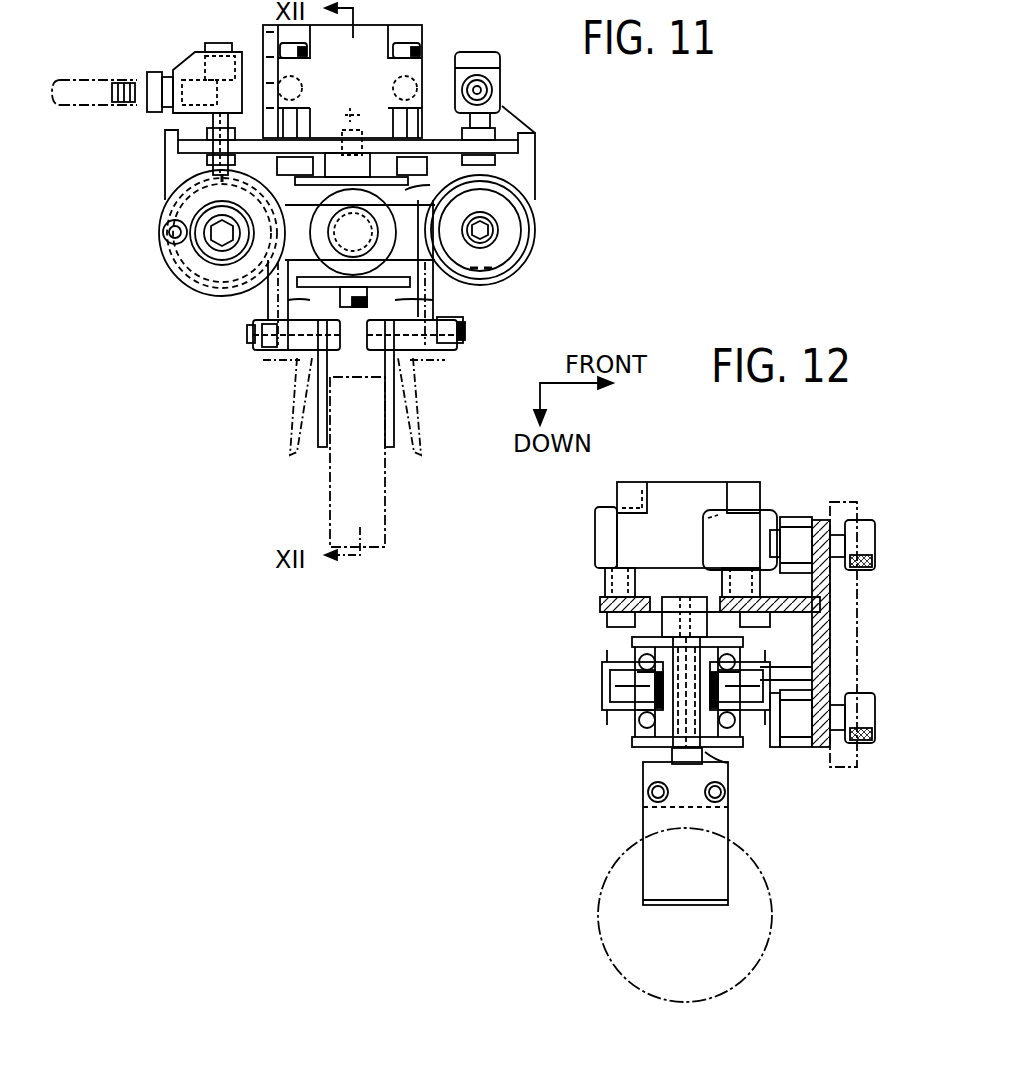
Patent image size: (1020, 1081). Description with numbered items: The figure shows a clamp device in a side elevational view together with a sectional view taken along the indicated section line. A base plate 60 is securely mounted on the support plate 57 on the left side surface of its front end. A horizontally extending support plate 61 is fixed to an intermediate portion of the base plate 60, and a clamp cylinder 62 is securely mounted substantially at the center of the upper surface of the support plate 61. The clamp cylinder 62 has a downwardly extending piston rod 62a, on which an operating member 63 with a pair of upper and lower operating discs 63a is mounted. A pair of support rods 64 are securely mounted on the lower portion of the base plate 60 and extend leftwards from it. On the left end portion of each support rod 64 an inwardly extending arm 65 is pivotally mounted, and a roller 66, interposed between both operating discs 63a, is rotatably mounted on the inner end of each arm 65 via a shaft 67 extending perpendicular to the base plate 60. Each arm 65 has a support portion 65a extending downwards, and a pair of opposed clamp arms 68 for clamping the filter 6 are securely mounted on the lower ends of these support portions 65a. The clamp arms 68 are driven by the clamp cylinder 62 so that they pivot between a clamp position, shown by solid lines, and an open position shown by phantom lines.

In FIG. 11, the filter 6 is at (386, 510).
In FIG. 12, the filter 6 is at (770, 955).
In FIG. 12, the support plate 57 is at (857, 638).
In FIG. 11, the base plate 60 is at (520, 110).
In FIG. 12, the base plate 60 is at (818, 750).
In FIG. 11, the support plate 61 is at (535, 180).
In FIG. 12, the support plate 61 is at (797, 592).
In FIG. 11, the clamp cylinder 62 is at (420, 48).
In FIG. 12, the clamp cylinder 62 is at (760, 487).
In FIG. 11, the piston rod 62a is at (380, 135).
In FIG. 12, the piston rod 62a is at (718, 580).
In FIG. 11, the operating member 63 is at (317, 170).
In FIG. 12, the operating member 63 is at (707, 770).
In FIG. 11, the operating discs 63a is at (440, 300).
In FIG. 12, the operating discs 63a is at (653, 767).
In FIG. 11, the support rods 64 is at (210, 275).
In FIG. 11, the arm 65 is at (428, 170).
In FIG. 12, the arm 65 is at (623, 717).
In FIG. 11, the support portions 65a is at (425, 365).
In FIG. 12, the support portions 65a is at (727, 763).
In FIG. 11, the roller 66 is at (353, 300).
In FIG. 12, the roller 66 is at (630, 647).
In FIG. 12, the shaft 67 is at (603, 670).
In FIG. 11, the clamp arms 68 is at (318, 437).
In FIG. 12, the clamp arms 68 is at (685, 890).